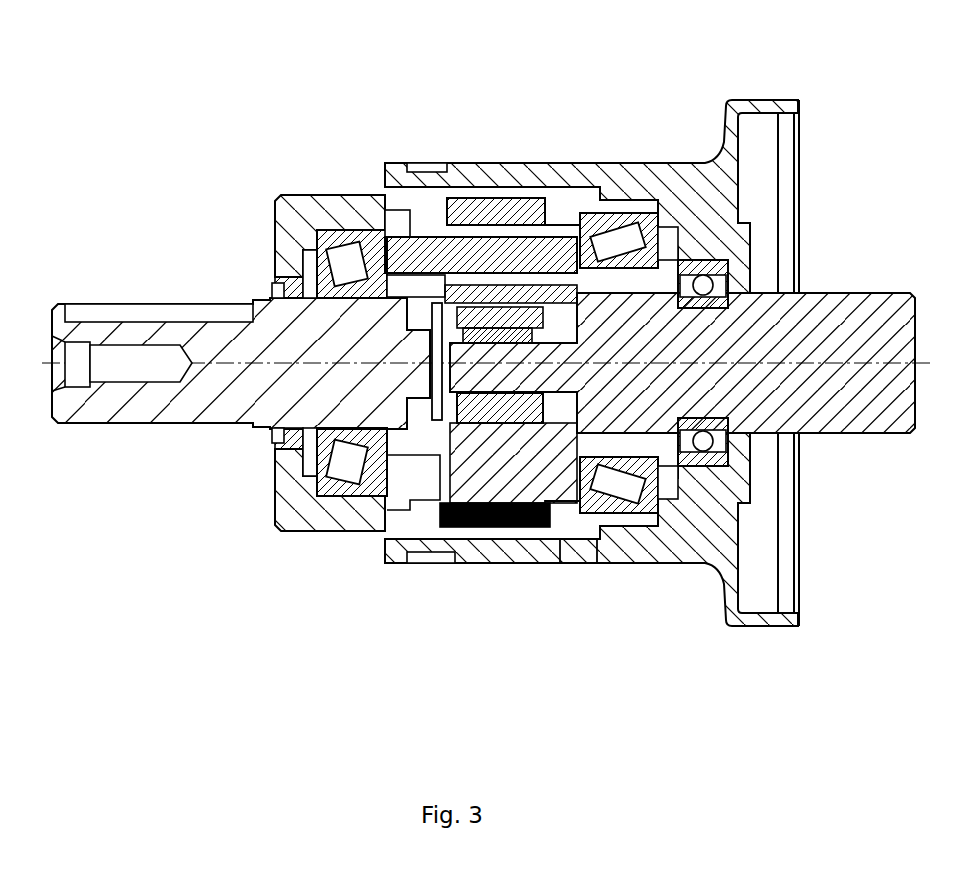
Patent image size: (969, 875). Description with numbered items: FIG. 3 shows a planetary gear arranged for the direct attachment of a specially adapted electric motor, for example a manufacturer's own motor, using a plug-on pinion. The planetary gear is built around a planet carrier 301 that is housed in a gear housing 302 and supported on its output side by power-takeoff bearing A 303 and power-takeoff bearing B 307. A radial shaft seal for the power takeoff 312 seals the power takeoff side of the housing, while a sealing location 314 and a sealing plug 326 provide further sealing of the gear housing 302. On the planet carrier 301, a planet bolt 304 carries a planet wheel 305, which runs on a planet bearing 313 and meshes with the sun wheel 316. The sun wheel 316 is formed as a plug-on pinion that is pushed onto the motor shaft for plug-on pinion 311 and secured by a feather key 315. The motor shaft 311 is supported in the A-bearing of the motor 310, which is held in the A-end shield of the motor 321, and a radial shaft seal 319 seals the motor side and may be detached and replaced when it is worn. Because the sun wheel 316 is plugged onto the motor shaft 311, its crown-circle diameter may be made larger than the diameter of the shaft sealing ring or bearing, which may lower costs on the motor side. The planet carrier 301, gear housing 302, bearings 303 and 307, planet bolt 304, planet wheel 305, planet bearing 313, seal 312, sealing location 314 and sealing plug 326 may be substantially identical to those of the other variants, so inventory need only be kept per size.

The planet carrier 301 is at (180, 415).
The gear housing 302 is at (458, 230).
The power-takeoff bearing A 303 is at (273, 278).
The planet bolt 304 is at (500, 258).
The planet wheel 305 is at (440, 278).
The power-takeoff bearing B 307 is at (592, 218).
The A-bearing of the motor 310 is at (698, 280).
The motor shaft for plug-on pinion 311 is at (755, 418).
The radial shaft seal for the power takeoff 312 is at (273, 297).
The planet bearing 313 is at (405, 167).
The sealing location 314 is at (600, 562).
The feather key 315 is at (276, 268).
The sun wheel (plug-on pinion) 316 is at (393, 233).
The radial shaft seal 319 is at (662, 222).
The A-end shield of the motor 321 is at (648, 250).
The sealing plug 326 is at (427, 552).